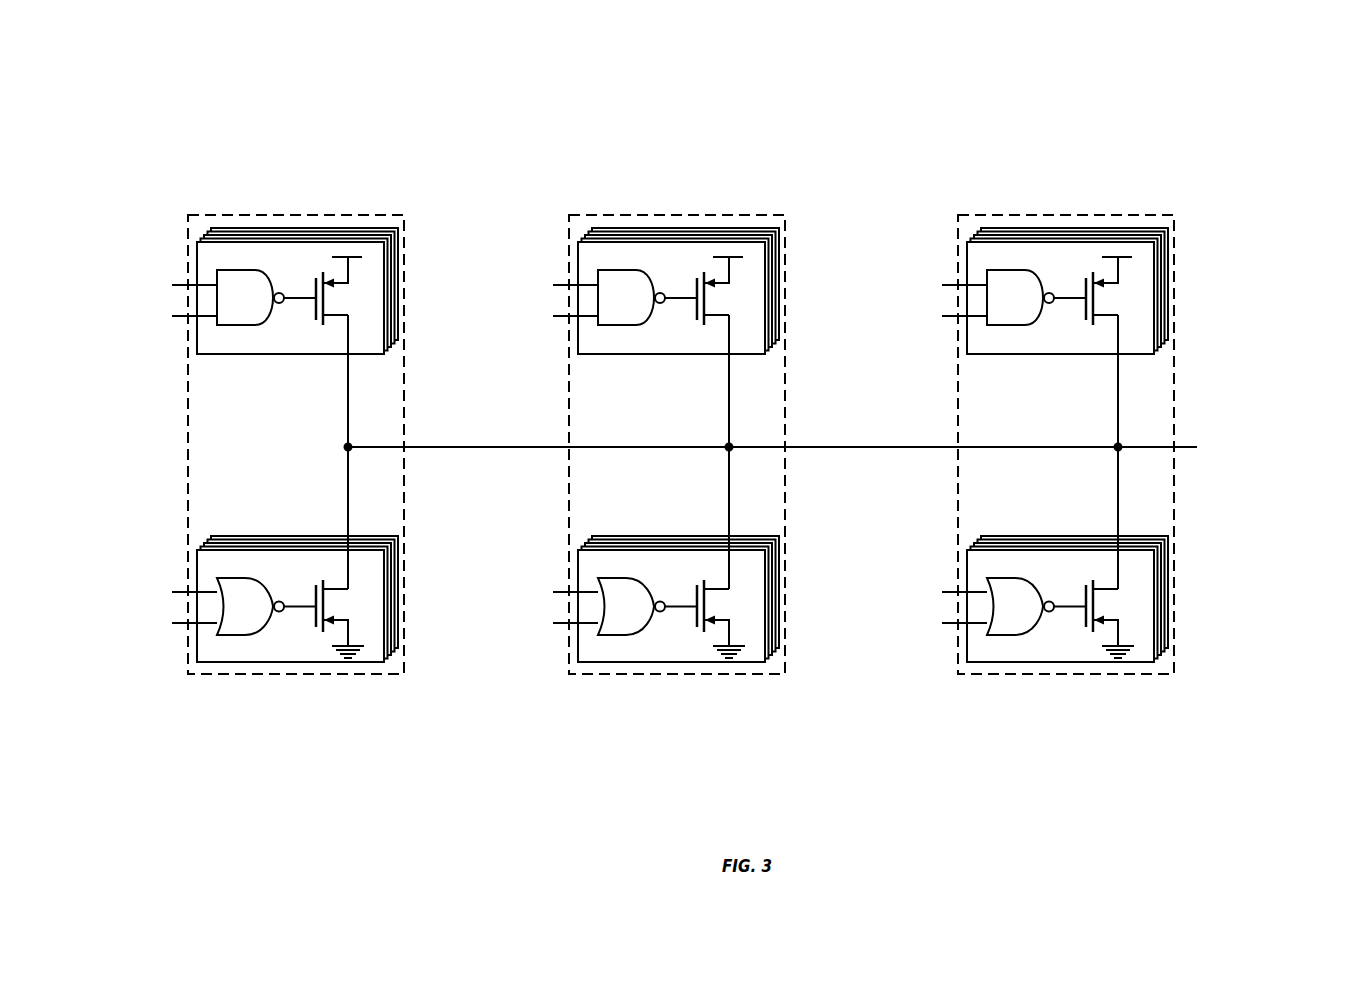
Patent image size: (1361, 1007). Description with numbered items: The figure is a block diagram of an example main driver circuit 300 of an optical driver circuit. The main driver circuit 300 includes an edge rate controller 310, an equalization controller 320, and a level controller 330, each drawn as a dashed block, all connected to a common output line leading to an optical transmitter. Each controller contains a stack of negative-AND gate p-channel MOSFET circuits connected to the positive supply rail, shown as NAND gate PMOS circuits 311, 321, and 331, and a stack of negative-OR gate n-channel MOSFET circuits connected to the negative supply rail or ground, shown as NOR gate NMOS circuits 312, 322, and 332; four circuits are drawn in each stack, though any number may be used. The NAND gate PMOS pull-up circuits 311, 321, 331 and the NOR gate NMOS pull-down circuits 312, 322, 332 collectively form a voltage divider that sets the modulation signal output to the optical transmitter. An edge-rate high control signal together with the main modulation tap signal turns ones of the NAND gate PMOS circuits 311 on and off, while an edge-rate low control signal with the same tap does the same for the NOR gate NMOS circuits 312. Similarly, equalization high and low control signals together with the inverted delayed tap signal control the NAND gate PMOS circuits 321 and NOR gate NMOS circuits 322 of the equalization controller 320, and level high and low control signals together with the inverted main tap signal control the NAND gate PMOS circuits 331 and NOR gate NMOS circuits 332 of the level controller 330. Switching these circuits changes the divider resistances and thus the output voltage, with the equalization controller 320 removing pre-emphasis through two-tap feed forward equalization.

The main driver circuit 300 is at (165, 50).
The edge rate controller 310 is at (285, 190).
The NAND gate PMOS circuits 311 is at (285, 376).
The NOR gate NMOS circuits 312 is at (284, 517).
The equalization controller 320 is at (669, 416).
The NAND gate PMOS circuits 321 is at (678, 318).
The NOR gate NMOS circuits 322 is at (678, 572).
The level controller 330 is at (1058, 416).
The NAND gate PMOS circuits 331 is at (1067, 318).
The NOR gate NMOS circuits 332 is at (1067, 572).